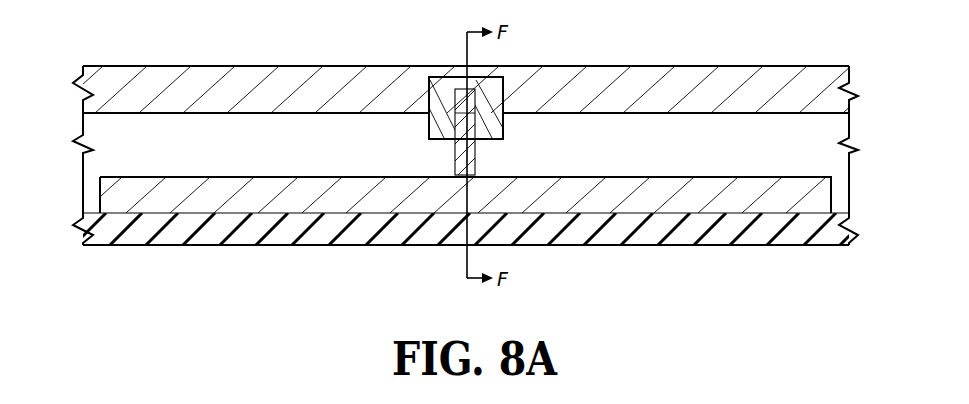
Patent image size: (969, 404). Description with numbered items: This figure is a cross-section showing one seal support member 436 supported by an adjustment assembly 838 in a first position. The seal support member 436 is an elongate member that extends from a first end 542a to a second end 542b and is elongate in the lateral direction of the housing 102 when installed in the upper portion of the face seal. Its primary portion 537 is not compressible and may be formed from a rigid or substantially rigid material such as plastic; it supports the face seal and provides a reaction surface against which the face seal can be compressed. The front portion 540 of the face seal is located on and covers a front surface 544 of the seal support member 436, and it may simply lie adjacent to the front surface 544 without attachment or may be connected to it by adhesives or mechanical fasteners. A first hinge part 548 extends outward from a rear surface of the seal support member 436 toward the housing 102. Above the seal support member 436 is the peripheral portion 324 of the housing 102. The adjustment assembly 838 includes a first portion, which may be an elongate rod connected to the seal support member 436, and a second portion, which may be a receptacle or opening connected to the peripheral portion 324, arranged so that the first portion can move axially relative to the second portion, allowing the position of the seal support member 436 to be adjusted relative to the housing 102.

The housing 102 is at (466, 148).
The peripheral portion 324 is at (775, 67).
The first hinge part 548 is at (837, 127).
The primary portion 537 is at (823, 185).
The first end 542a is at (103, 202).
The second end 542b is at (824, 203).
The front surface 544 is at (300, 215).
The front portion 540 is at (558, 245).
The seal support member 436 is at (82, 199).
The adjustment assembly 838 is at (416, 151).